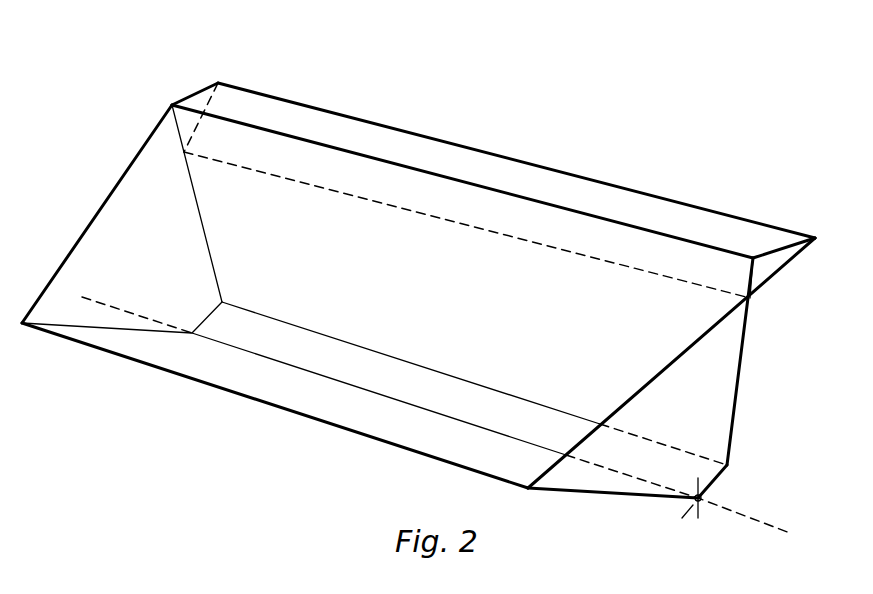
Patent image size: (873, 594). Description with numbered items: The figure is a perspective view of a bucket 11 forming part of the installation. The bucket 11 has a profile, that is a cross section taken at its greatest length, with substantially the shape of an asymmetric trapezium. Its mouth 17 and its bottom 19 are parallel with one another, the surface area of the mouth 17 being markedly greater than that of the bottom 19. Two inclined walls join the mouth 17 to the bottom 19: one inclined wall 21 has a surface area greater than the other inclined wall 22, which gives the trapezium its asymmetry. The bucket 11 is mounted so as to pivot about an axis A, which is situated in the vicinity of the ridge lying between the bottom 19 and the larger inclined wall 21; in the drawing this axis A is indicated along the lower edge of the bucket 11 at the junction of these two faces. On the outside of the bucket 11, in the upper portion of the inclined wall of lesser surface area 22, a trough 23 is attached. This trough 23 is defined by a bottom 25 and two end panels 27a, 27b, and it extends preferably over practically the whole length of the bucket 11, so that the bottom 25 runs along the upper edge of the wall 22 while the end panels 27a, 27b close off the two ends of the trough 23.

The bucket 11 is at (330, 76).
The mouth 17 is at (140, 195).
The bottom 19 is at (387, 375).
The inclined wall 21 is at (323, 398).
The inclined wall of lesser surface area 22 is at (605, 283).
The trough 23 is at (493, 152).
The bottom of the trough 25 is at (360, 133).
The end panel 27a is at (200, 92).
The end panel 27b is at (770, 263).
The axis A is at (743, 517).